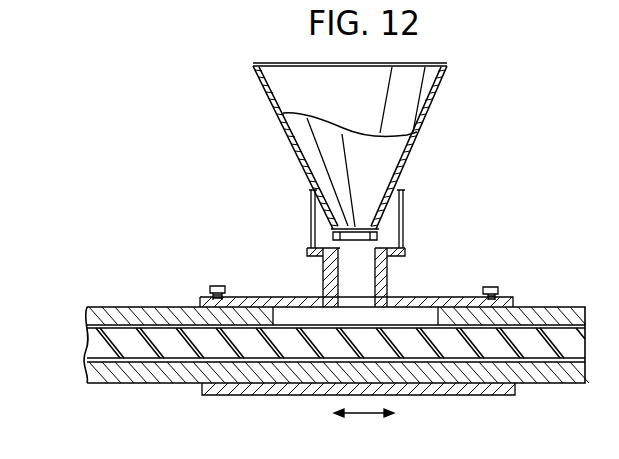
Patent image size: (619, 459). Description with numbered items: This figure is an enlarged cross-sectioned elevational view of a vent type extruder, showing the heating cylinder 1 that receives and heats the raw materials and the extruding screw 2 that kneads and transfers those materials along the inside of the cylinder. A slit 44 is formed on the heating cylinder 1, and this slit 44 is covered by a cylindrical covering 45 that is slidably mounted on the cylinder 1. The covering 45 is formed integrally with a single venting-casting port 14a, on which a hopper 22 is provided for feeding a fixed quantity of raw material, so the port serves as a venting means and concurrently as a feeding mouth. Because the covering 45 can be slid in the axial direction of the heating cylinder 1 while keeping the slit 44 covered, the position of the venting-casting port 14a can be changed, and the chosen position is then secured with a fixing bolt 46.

The hopper 22 is at (428, 100).
The venting-casting port 14a is at (331, 280).
The slit 44 is at (421, 311).
The cylindrical covering 45 is at (243, 297).
The fixing bolt 46 is at (489, 296).
The heating cylinder 1 is at (537, 307).
The extruding screw 2 is at (549, 343).